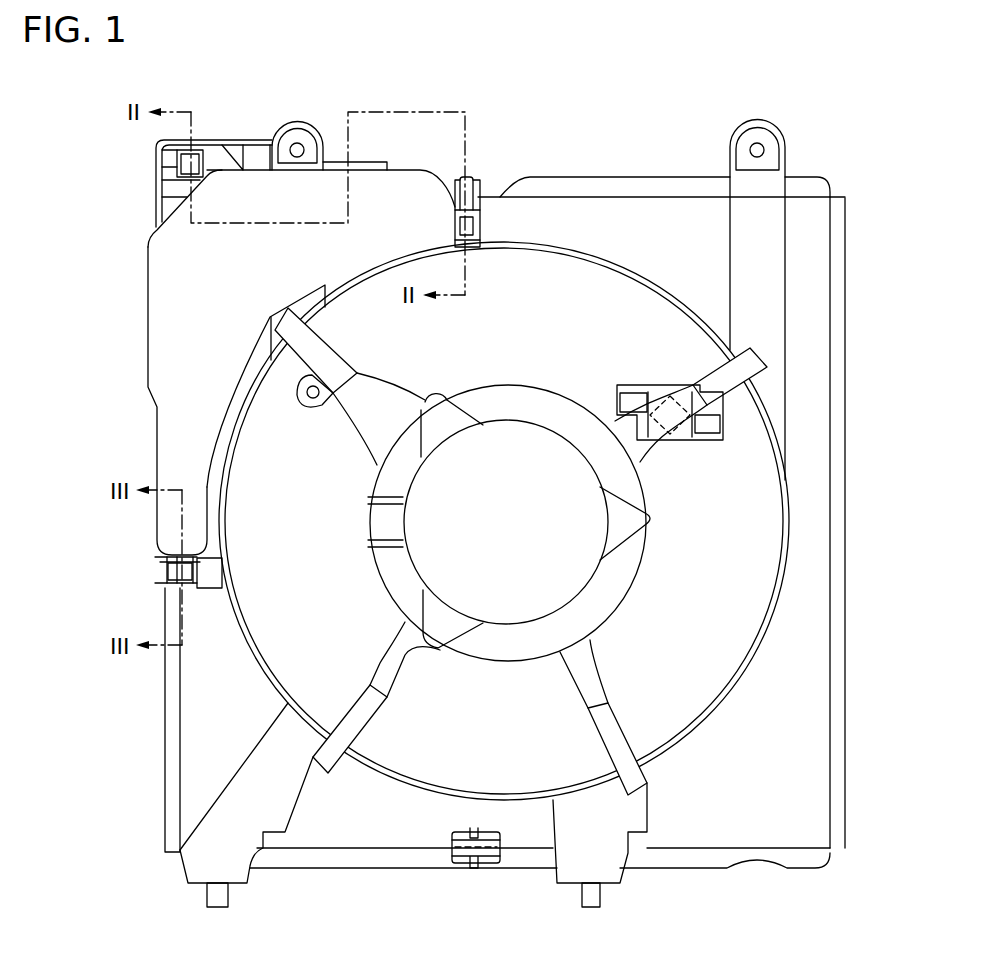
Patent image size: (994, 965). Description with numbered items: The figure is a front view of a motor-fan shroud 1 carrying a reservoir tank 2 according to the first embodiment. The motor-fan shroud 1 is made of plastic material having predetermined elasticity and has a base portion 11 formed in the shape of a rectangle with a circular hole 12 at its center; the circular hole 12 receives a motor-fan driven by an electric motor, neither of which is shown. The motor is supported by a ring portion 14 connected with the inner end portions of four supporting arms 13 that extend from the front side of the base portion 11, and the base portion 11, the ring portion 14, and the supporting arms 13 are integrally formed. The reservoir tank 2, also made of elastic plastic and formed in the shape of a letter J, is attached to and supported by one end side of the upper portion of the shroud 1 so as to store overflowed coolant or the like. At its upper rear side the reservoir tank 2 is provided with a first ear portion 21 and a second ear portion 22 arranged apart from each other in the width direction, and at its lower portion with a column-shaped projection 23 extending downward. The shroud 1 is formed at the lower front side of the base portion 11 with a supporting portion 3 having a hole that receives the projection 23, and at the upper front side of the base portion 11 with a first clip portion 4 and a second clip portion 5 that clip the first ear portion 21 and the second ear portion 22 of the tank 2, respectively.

The motor-fan shroud 1 is at (856, 251).
The reservoir tank 2 is at (163, 319).
The supporting portion 3 is at (148, 563).
The first clip portion 4 is at (168, 159).
The second clip portion 5 is at (490, 218).
The base portion 11 is at (803, 752).
The circular hole 12 is at (775, 545).
The supporting arms 13 is at (717, 373).
The ring portion 14 is at (377, 573).
The first ear portion 21 is at (215, 148).
The second ear portion 22 is at (468, 178).
The projection 23 is at (162, 570).